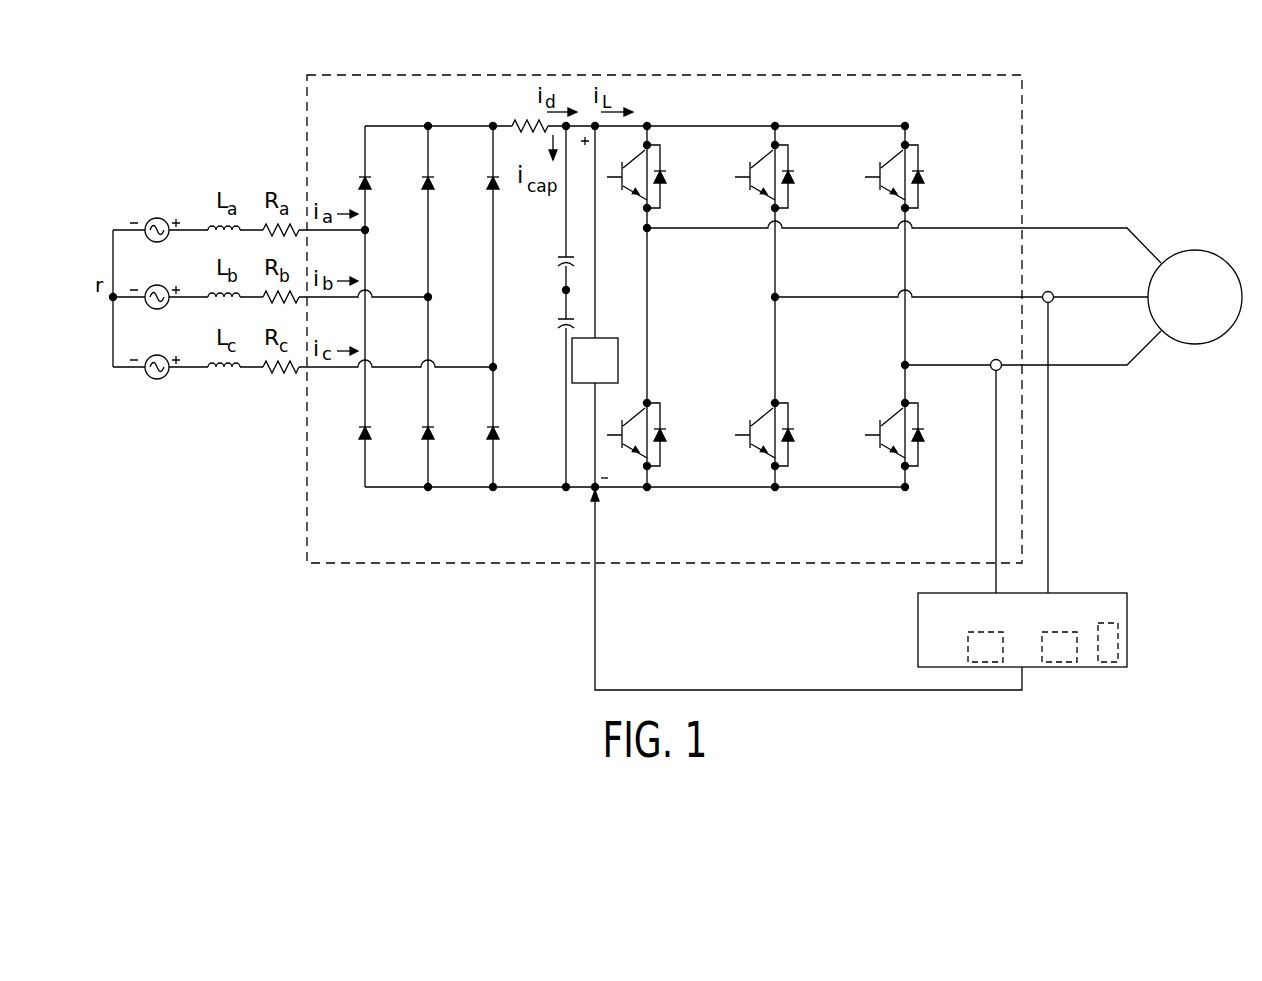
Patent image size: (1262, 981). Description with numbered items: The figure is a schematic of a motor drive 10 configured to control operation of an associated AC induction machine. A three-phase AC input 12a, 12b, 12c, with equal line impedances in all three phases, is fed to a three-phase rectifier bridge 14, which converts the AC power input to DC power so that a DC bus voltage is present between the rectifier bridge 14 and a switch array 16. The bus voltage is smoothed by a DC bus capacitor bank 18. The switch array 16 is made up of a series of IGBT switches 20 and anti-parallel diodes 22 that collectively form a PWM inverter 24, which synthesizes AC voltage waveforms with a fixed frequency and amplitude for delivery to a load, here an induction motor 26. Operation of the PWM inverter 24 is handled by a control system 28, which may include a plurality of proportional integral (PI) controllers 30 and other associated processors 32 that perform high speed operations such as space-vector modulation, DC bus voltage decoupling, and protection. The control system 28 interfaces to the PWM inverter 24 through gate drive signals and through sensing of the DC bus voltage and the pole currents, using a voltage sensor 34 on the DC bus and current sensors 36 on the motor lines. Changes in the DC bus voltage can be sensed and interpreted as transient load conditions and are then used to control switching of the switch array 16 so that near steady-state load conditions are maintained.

The motor drive 10 is at (1022, 104).
The three-phase AC input 12a is at (166, 236).
The three-phase AC input 12b is at (166, 303).
The three-phase AC input 12c is at (166, 373).
The three-phase rectifier bridge 14 is at (386, 496).
The switch array 16 is at (784, 343).
The DC bus capacitor bank 18 is at (575, 257).
The IGBT switch 20 is at (752, 293).
The anti-parallel diode 22 is at (799, 299).
The PWM inverter 24 is at (727, 348).
The induction motor 26 is at (1230, 262).
The control system 28 is at (1088, 593).
The proportional integral (PI) controller 30 is at (968, 645).
The associated processor 32 is at (1117, 644).
The voltage sensor 34 is at (618, 357).
The current sensor 36 is at (1052, 292).